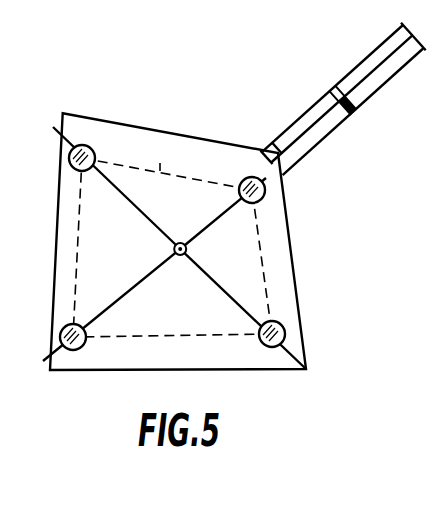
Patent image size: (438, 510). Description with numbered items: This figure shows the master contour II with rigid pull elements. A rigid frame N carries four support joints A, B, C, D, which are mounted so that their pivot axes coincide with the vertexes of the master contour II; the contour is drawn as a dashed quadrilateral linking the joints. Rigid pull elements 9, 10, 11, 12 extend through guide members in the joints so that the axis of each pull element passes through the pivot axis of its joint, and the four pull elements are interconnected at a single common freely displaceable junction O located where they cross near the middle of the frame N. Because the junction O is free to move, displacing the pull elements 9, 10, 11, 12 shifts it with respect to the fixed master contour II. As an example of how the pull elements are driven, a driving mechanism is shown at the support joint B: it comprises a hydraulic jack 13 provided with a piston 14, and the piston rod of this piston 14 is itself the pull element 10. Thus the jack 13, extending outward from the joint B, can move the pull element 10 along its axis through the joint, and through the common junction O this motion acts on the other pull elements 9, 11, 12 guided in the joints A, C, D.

The rigid pull element 9 is at (228, 292).
The rigid pull element 10 is at (211, 222).
The rigid pull element 11 is at (139, 211).
The rigid pull element 12 is at (120, 296).
The hydraulic jack 13 is at (373, 80).
The piston 14 is at (350, 119).
The rigid frame N is at (296, 293).
The common freely displaceable junction O is at (174, 250).
The support joint A is at (259, 343).
The support joint B is at (248, 178).
The support joint C is at (79, 144).
The support joint D is at (81, 345).
The master contour II is at (169, 156).